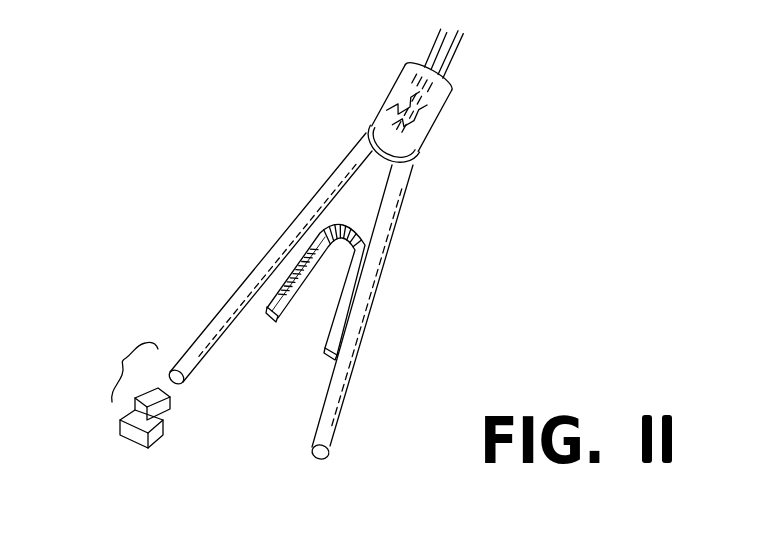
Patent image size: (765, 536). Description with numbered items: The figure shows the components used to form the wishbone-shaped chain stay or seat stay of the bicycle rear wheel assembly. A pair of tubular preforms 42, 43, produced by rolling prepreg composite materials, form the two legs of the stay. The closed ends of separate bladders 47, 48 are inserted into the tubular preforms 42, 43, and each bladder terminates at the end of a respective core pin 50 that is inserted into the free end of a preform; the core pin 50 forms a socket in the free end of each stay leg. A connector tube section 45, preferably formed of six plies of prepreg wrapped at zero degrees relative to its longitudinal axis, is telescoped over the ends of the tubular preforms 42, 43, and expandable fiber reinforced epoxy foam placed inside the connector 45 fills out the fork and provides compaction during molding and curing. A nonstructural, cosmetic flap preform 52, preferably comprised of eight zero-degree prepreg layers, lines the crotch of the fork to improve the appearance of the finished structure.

The tubular preform 42 is at (243, 291).
The tubular preform 43 is at (364, 316).
The connector tube section 45 is at (452, 103).
The bladder 47 is at (436, 50).
The bladder 48 is at (462, 40).
The core pin 50 is at (125, 412).
The cosmetic flap preform 52 is at (279, 316).